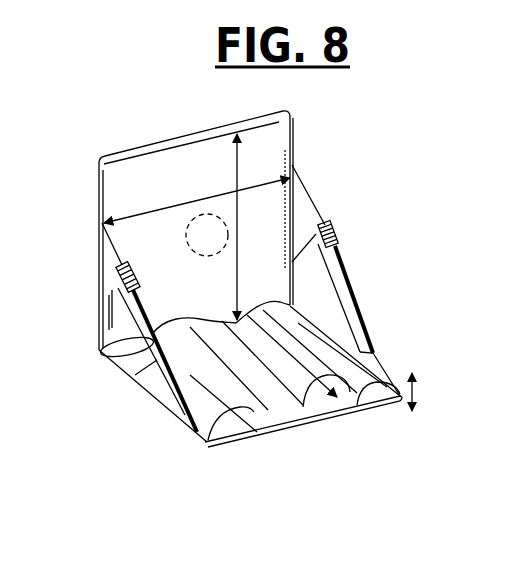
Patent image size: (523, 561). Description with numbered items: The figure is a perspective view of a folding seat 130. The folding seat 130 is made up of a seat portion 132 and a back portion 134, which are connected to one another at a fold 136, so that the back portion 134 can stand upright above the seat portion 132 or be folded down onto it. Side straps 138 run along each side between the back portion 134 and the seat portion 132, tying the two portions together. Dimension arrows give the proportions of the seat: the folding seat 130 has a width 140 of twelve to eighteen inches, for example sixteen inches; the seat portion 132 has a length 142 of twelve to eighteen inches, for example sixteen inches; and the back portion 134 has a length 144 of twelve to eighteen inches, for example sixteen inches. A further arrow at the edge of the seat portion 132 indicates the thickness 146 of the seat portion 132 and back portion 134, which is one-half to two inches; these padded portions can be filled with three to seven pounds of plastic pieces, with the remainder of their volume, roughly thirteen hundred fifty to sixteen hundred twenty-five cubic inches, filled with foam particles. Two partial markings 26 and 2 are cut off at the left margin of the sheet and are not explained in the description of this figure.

The folding seat 130 is at (116, 151).
The back portion 134 is at (204, 137).
The width 140 is at (135, 213).
The length of back portion 144 is at (238, 173).
The side straps 138 is at (97, 351).
The fold 136 is at (182, 388).
The seat portion 132 is at (268, 410).
The length of seat portion 142 is at (305, 408).
The thickness 146 is at (420, 395).
The seat 26 is at (19, 466).
The seat 2 is at (4, 225).